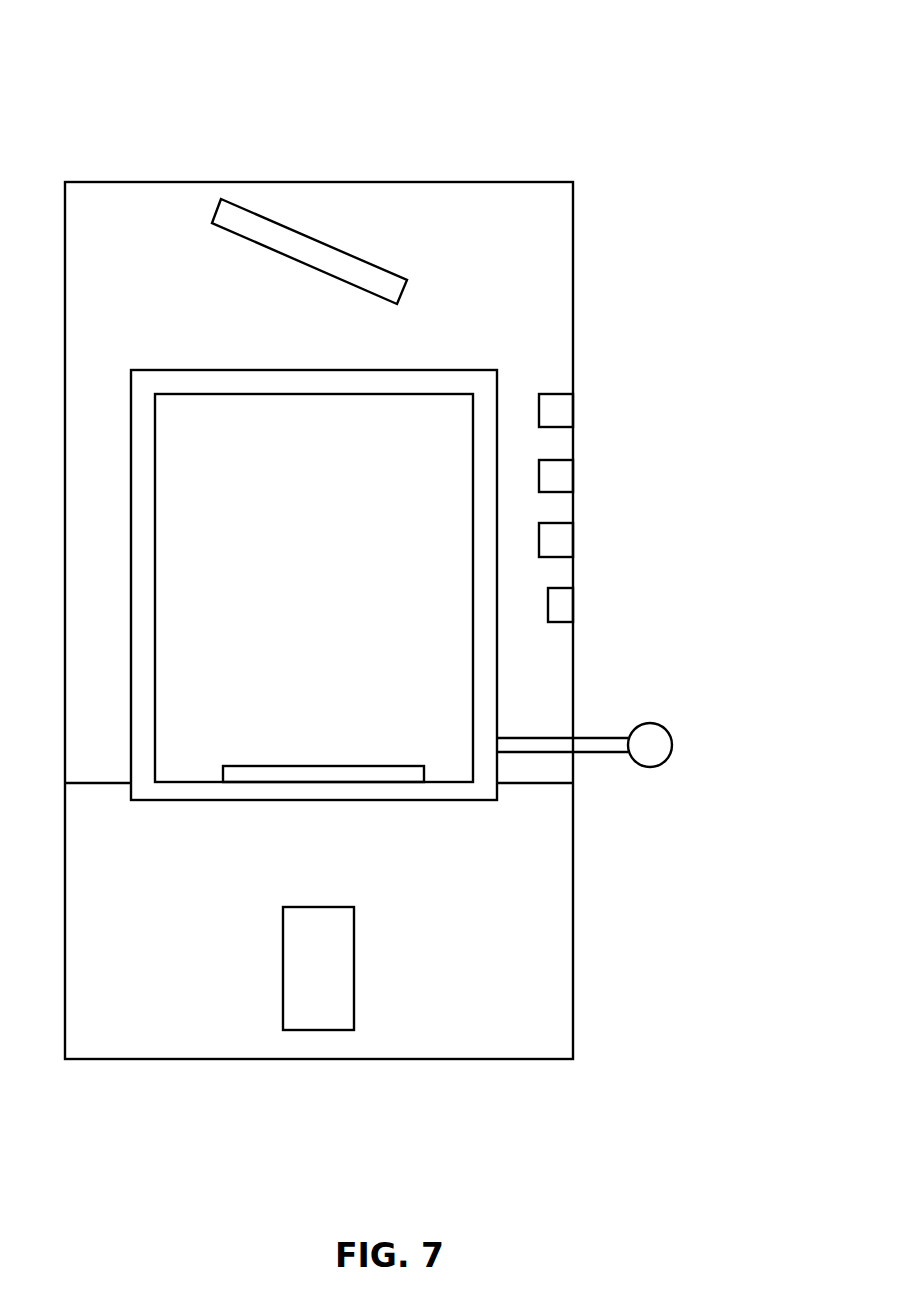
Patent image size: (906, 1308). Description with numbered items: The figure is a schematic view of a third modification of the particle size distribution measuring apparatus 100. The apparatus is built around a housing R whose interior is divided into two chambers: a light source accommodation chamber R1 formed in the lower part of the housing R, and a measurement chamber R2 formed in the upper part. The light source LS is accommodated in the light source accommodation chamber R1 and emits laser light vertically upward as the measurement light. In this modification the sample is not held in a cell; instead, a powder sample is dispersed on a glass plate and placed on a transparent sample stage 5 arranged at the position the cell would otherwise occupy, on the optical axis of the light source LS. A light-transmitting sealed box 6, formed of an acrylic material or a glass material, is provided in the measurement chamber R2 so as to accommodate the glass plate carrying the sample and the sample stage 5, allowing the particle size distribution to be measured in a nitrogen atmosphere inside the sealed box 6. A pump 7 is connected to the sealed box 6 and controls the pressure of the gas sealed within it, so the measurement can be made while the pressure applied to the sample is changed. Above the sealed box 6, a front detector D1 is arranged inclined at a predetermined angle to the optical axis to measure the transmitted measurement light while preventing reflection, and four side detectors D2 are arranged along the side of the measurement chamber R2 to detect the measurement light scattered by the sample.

The particle size distribution measuring apparatus 100 is at (684, 64).
The housing R is at (89, 181).
The light source accommodation chamber R1 is at (92, 1023).
The measurement chamber R2 is at (123, 221).
The front detector D1 is at (360, 258).
The side detectors D2 is at (575, 413).
The sealed box 6 is at (180, 369).
The sample stage 5 is at (241, 765).
The pump 7 is at (651, 768).
The light source LS is at (356, 967).